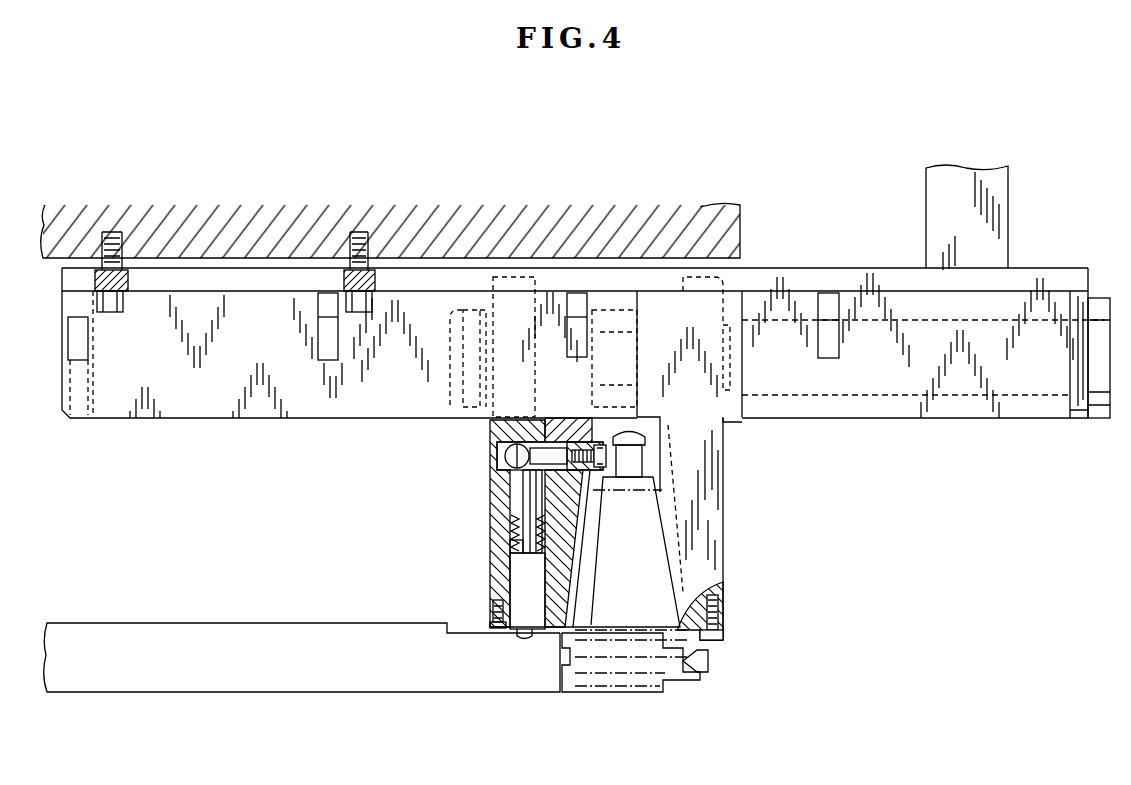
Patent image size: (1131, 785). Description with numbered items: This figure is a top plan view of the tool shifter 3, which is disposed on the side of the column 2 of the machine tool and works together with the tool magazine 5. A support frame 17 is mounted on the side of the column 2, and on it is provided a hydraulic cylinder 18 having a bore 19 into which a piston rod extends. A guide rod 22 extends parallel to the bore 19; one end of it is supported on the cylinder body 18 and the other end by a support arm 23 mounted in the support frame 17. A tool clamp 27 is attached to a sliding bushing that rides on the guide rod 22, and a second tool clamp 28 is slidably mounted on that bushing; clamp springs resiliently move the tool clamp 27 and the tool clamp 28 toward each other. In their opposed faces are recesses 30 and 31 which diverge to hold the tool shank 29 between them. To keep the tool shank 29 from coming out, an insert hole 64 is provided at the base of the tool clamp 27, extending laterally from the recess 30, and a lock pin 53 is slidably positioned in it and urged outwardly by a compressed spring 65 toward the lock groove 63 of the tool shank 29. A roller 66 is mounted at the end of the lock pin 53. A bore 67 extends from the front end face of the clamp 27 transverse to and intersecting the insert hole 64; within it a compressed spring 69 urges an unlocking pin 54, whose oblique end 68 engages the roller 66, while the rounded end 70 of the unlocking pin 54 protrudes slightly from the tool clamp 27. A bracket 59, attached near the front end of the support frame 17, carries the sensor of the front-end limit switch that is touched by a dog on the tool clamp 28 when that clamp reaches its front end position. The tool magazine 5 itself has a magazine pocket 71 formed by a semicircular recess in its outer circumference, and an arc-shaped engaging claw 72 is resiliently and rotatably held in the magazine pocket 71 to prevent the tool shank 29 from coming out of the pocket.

The column 2 is at (267, 233).
The tool shifter 3 is at (703, 265).
The tool magazine 5 is at (203, 692).
The support frame 17 is at (768, 283).
The hydraulic cylinder 18 is at (383, 387).
The bore 19 is at (466, 315).
The guide rod 22 is at (928, 397).
The support arm 23 is at (1082, 380).
The tool clamp 27 is at (553, 618).
The tool clamp 28 is at (697, 495).
The tool shank 29 is at (652, 555).
The recess 30 is at (518, 587).
The recess 31 is at (700, 650).
The lock pin 53 is at (597, 450).
The unlocking pin 54 is at (503, 598).
The bracket 59 is at (980, 215).
The lock groove 63 is at (650, 447).
The insert hole 64 is at (563, 428).
The compressed spring 65 is at (580, 447).
The roller 66 is at (503, 457).
The bore 67 is at (505, 528).
The oblique end 68 is at (515, 465).
The compressed spring 69 is at (505, 545).
The rounded end 70 is at (523, 605).
The magazine pocket 71 is at (610, 692).
The engaging claw 72 is at (705, 672).